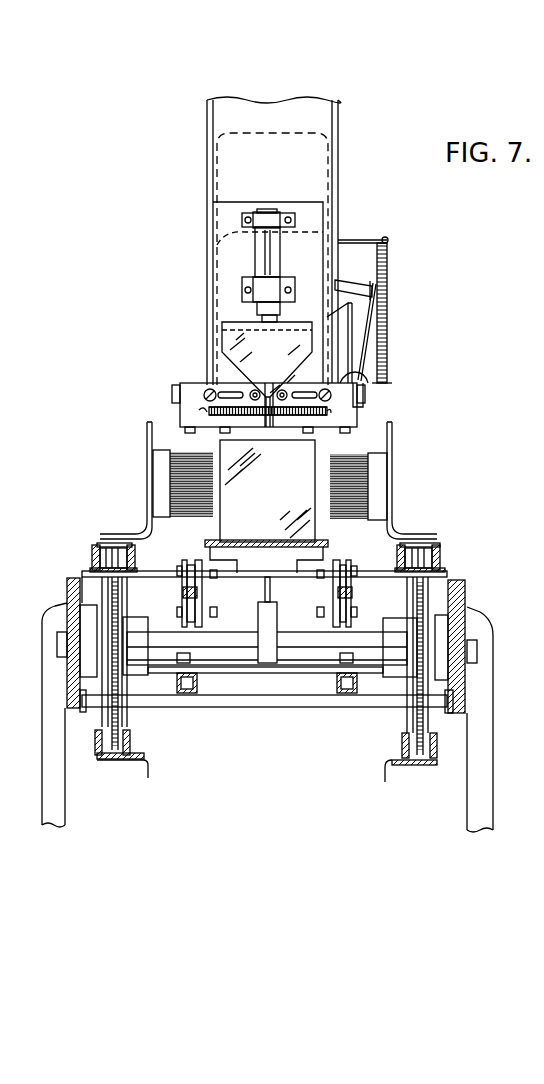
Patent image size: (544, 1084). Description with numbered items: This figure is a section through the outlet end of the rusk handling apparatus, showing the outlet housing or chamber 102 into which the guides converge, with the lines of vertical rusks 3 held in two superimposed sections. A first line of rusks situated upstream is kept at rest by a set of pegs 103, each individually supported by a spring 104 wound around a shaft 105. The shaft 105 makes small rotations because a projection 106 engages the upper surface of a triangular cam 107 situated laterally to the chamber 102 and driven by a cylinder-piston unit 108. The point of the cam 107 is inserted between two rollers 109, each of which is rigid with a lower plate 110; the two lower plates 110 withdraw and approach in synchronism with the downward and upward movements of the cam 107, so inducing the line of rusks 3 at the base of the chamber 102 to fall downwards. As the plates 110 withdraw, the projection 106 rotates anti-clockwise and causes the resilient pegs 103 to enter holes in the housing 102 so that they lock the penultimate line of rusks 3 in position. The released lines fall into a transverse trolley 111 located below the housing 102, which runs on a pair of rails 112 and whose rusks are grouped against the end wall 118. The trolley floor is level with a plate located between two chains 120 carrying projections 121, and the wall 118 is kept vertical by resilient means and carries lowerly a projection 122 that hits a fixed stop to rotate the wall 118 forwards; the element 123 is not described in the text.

The rusks 3 is at (318, 129).
The outlet housing or chamber 102 is at (204, 210).
The pegs 103 is at (360, 283).
The spring 104 is at (368, 318).
The shaft 105 is at (370, 402).
The projection 106 is at (330, 325).
The triangular cam 107 is at (243, 342).
The cylinder-piston unit 108 is at (255, 252).
The rollers 109 is at (238, 376).
The lower plates 110 is at (180, 412).
The transverse trolley 111 is at (330, 553).
The rails 112 is at (190, 593).
The end wall 118 is at (235, 490).
The chains 120 is at (115, 553).
The projections 121 is at (147, 447).
The projection 122 is at (262, 604).
The center block 123 is at (277, 606).